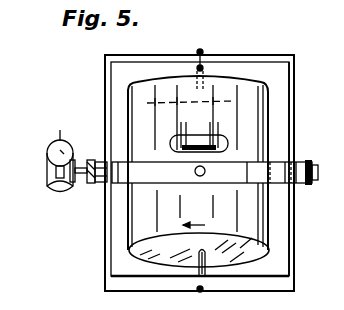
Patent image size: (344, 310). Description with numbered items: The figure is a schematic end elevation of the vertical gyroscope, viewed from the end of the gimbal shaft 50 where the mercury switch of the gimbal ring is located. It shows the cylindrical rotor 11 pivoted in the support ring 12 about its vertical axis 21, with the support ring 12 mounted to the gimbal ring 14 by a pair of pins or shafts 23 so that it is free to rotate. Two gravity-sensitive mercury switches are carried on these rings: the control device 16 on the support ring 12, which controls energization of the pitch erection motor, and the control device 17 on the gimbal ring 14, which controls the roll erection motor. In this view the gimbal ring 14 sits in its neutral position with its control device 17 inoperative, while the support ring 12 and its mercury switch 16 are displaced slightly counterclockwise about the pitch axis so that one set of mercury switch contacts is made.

The rotor 11 is at (252, 116).
The support ring 12 is at (294, 129).
The gimbal ring 14 is at (234, 175).
The control device 16 is at (47, 176).
The control device 17 is at (199, 141).
The axis 21 is at (204, 51).
The pins or shafts 23 is at (318, 175).
The gimbal shaft 50 is at (203, 176).